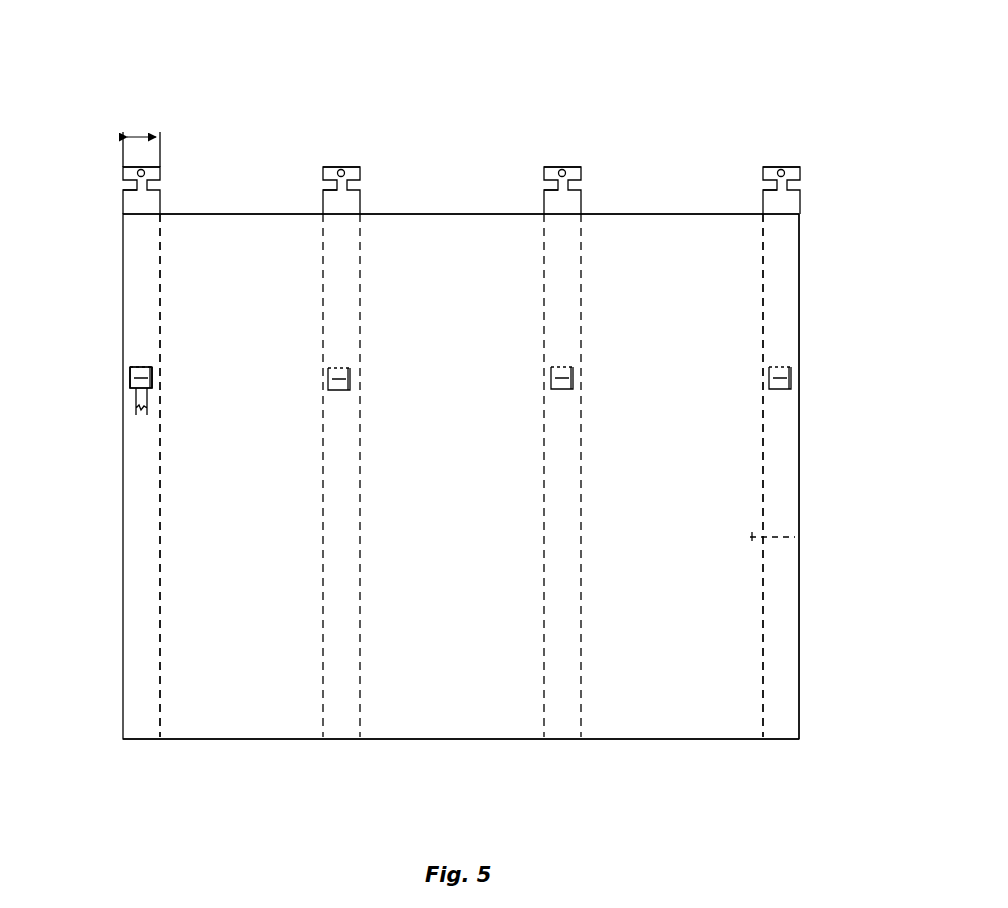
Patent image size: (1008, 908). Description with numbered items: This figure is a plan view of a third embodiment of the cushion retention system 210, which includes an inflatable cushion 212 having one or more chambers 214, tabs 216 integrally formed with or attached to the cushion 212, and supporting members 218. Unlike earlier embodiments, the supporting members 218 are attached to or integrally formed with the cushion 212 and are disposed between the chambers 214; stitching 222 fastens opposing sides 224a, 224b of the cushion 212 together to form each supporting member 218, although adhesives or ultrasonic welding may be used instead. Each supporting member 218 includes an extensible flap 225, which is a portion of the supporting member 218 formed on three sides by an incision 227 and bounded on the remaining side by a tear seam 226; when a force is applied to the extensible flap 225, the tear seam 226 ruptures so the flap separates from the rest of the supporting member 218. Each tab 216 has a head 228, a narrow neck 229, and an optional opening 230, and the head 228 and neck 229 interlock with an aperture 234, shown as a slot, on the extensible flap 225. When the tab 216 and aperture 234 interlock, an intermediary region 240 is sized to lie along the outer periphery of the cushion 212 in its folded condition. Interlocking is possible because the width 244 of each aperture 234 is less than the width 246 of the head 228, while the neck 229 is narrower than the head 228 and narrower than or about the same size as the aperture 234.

The cushion retention system 210 is at (116, 98).
The cushion 212 is at (118, 478).
The chambers 214 is at (258, 724).
The tabs 216 is at (168, 157).
The supporting members 218 is at (162, 294).
The stitching 222 is at (163, 326).
The opposing side 224a is at (714, 455).
The opposing side 224b is at (795, 537).
The extensible flap 225 is at (130, 385).
The tear seam 226 is at (142, 358).
The incision 227 is at (130, 375).
The head 228 is at (125, 171).
The narrow neck 229 is at (128, 183).
The opening 230 is at (146, 173).
The aperture 234 is at (137, 368).
The intermediary region 240 is at (135, 270).
The width of aperture 244 is at (139, 412).
The width of head 246 is at (148, 133).